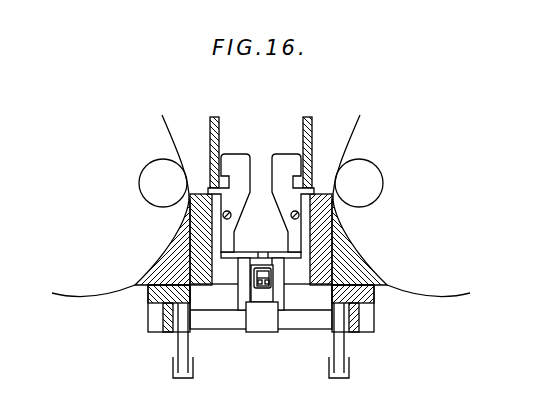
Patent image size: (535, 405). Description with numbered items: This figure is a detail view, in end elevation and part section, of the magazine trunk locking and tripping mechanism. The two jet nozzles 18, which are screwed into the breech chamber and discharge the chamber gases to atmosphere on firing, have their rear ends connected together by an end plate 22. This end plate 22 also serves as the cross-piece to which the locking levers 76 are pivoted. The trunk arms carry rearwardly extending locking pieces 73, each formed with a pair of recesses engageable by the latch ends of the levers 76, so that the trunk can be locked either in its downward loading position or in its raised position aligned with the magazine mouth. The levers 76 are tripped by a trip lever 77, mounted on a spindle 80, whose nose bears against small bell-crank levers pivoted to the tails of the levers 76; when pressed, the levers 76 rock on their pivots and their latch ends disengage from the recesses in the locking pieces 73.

The jet nozzles 18 is at (110, 282).
The end plate 22 is at (287, 243).
The locking pieces 73 is at (300, 127).
The levers 76 is at (275, 172).
The trip lever 77 is at (262, 315).
The spindle 80 is at (308, 318).